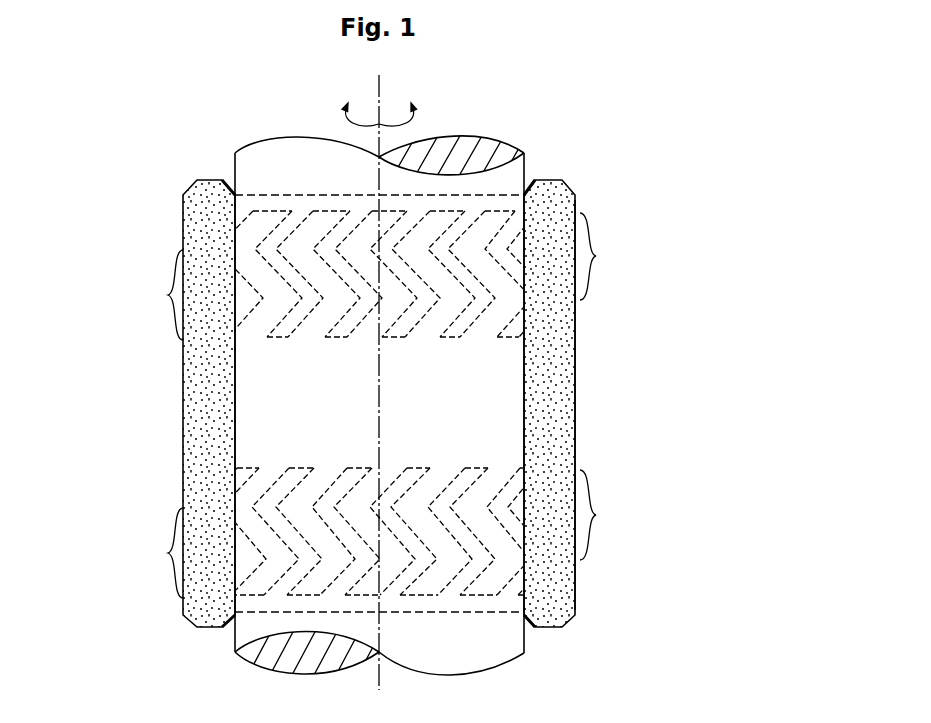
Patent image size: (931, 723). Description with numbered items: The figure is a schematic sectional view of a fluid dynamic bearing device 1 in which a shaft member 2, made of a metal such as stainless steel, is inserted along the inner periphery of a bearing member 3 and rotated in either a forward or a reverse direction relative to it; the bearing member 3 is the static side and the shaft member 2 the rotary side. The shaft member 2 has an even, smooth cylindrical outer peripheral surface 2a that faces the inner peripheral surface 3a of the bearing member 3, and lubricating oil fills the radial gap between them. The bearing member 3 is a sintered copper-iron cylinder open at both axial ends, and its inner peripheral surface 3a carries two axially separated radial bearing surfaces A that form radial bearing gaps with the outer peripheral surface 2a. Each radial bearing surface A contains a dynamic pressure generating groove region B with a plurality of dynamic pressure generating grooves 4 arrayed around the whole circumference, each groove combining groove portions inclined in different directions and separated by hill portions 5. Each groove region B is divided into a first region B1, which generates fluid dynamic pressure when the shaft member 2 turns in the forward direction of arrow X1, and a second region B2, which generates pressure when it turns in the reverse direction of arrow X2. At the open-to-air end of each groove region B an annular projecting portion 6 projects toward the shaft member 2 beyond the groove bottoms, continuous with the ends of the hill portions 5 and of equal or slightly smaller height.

The fluid dynamic bearing device 1 is at (133, 234).
The shaft member 2 is at (263, 137).
The outer peripheral surface 2a is at (524, 170).
The bearing member 3 is at (579, 186).
The inner peripheral surface 3a is at (516, 376).
The dynamic pressure generating grooves 4 is at (326, 312).
The hill portions 5 is at (407, 316).
The annular projecting portion 6 is at (474, 207).
The radial bearing surfaces A is at (244, 250).
The dynamic pressure generating groove region B is at (278, 341).
The first region B1 is at (602, 386).
The second region B2 is at (158, 424).
The arrow X1 is at (403, 102).
The arrow X2 is at (354, 102).